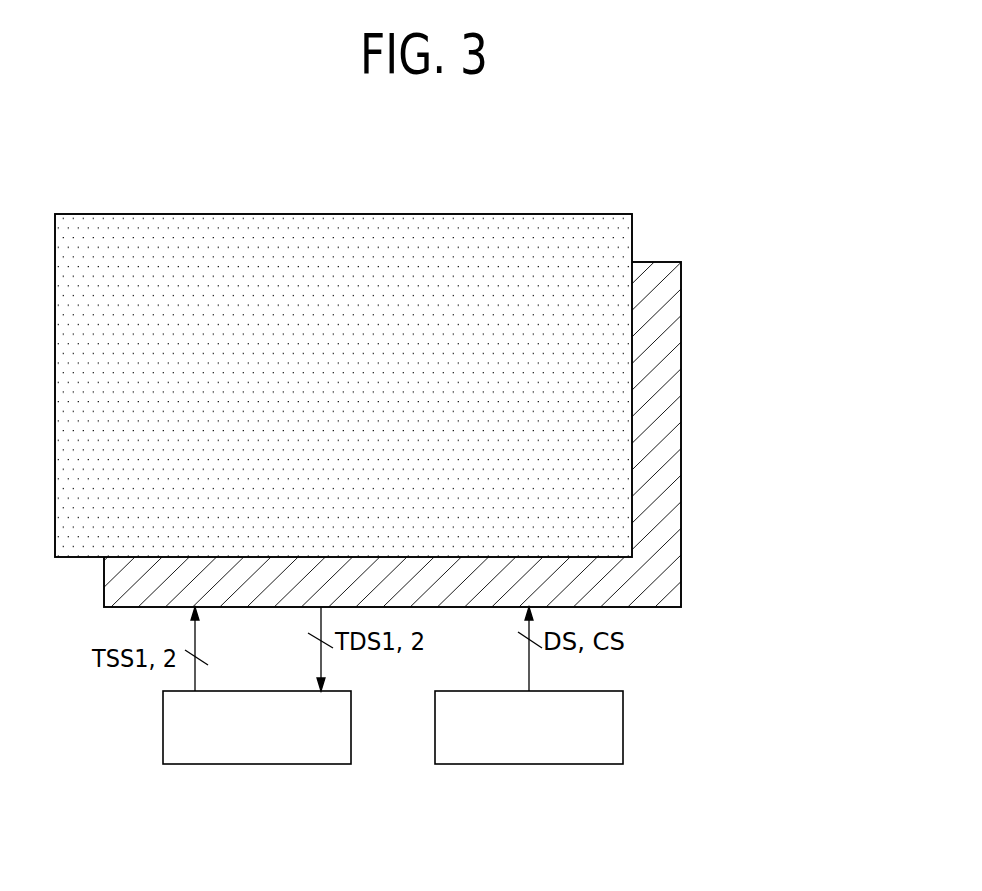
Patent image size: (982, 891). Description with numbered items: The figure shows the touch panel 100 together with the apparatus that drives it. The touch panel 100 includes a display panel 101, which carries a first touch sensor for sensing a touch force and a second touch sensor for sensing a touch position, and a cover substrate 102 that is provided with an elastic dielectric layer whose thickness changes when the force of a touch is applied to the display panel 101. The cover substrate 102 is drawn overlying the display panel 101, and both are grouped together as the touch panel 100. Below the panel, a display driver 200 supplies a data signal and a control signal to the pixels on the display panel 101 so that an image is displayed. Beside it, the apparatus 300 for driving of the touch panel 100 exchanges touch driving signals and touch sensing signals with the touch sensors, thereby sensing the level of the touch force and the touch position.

The touch panel 100 is at (491, 410).
The display panel 101 is at (683, 460).
The cover substrate 102 is at (632, 346).
The display driver 200 is at (530, 765).
The apparatus for driving of touch panel 300 is at (258, 765).